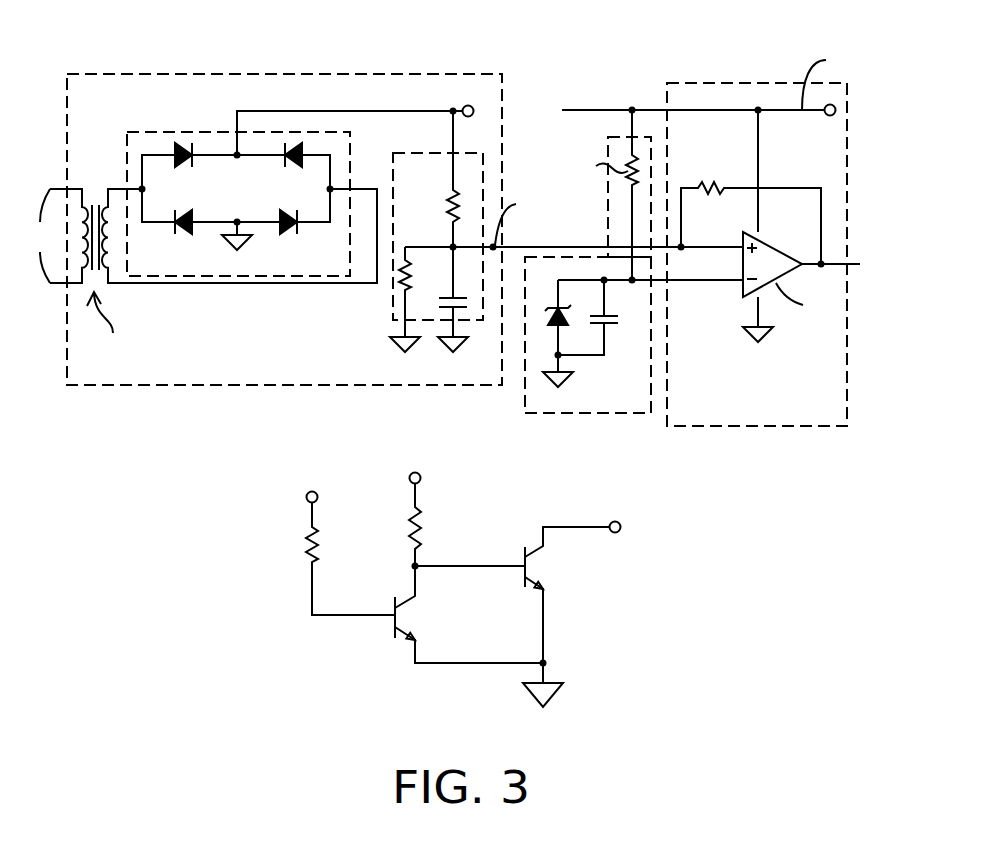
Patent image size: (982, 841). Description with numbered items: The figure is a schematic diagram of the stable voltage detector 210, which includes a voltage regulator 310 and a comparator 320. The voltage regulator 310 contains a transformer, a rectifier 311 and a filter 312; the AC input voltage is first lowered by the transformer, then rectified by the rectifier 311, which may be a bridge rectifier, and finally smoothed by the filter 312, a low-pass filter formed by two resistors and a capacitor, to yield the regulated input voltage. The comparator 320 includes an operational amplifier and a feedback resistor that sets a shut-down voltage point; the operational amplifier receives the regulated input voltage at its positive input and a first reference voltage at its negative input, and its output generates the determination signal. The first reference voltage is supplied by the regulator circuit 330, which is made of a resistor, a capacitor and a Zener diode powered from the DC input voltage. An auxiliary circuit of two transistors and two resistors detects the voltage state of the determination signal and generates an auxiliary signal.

The stable voltage detector 210 is at (845, 490).
The voltage regulator 310 is at (287, 74).
The rectifier 311 is at (279, 280).
The filter 312 is at (420, 152).
The comparator 320 is at (760, 83).
The regulator circuit 330 is at (594, 413).